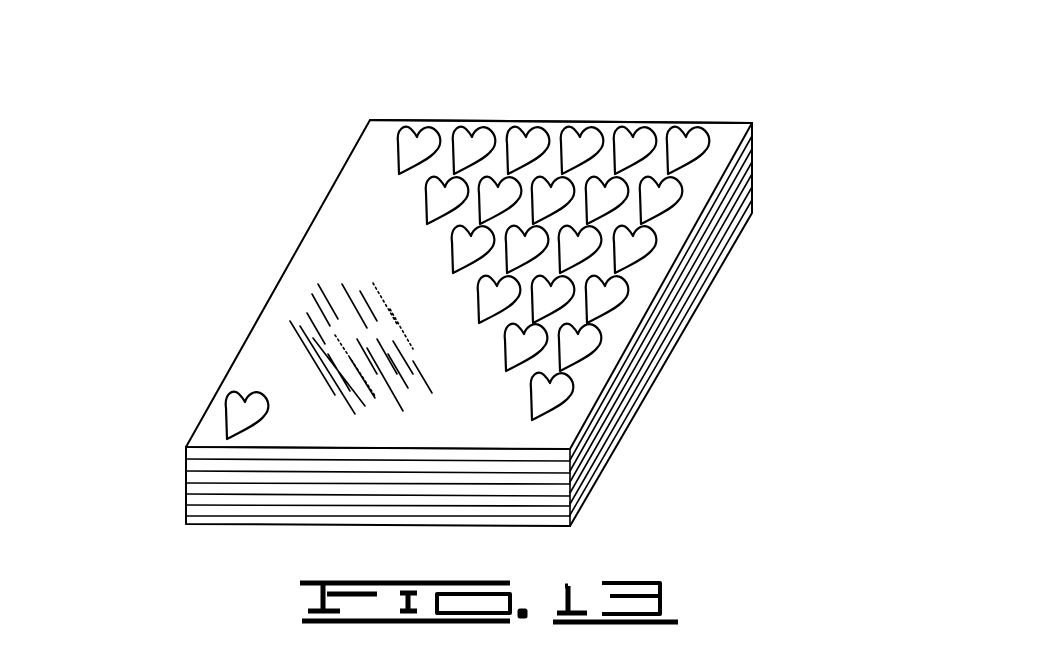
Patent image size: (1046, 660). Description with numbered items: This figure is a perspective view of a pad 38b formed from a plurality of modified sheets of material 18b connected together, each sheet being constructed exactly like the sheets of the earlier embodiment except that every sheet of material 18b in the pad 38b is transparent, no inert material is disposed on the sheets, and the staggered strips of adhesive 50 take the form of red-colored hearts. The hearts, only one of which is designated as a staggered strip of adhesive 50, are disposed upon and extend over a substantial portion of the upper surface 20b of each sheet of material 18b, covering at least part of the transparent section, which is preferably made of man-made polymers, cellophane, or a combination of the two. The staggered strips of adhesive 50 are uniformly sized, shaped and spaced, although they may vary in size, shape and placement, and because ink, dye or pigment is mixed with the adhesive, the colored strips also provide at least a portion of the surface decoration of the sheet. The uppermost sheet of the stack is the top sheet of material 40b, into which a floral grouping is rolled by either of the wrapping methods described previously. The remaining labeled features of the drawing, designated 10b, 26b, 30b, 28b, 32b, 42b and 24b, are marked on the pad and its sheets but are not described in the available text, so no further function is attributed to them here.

The laminated sheet product 10b is at (427, 97).
The sheet of material 18b is at (393, 117).
The upper surface 20b is at (358, 187).
The adhesive region 26b is at (275, 290).
The top edge 30b is at (497, 120).
The top sheet of material 40b is at (613, 130).
The staggered strips of adhesive 50 is at (683, 147).
The side edge 28b is at (757, 125).
The second sheet layer 32b is at (550, 453).
The intermediate sheet layer 42b is at (200, 473).
The front edge 24b is at (572, 495).
The pad 38b is at (187, 503).